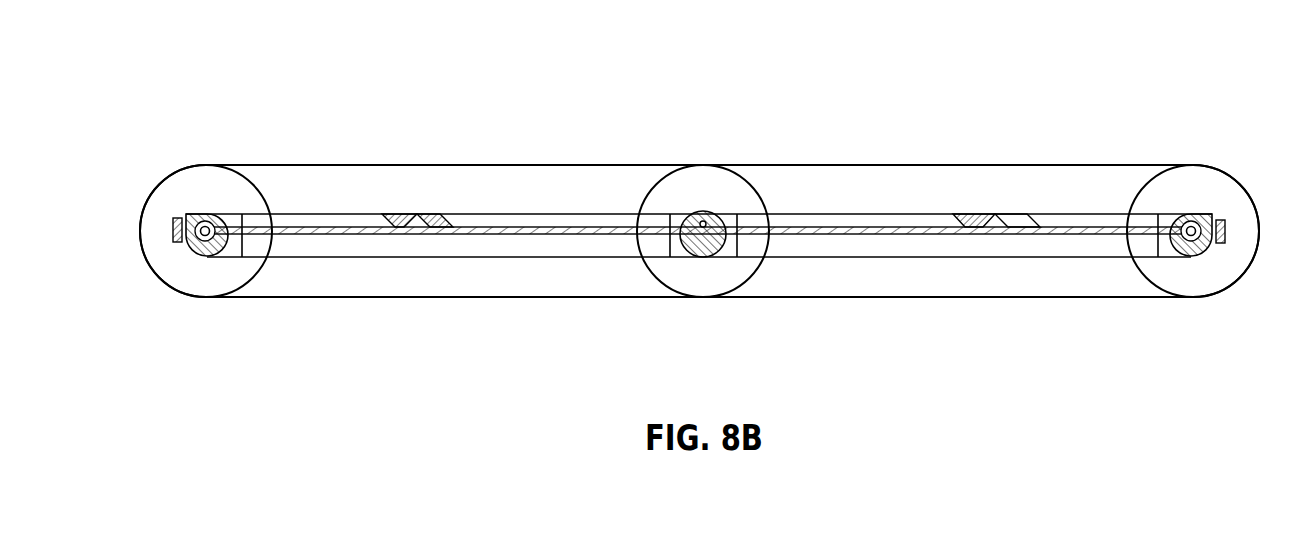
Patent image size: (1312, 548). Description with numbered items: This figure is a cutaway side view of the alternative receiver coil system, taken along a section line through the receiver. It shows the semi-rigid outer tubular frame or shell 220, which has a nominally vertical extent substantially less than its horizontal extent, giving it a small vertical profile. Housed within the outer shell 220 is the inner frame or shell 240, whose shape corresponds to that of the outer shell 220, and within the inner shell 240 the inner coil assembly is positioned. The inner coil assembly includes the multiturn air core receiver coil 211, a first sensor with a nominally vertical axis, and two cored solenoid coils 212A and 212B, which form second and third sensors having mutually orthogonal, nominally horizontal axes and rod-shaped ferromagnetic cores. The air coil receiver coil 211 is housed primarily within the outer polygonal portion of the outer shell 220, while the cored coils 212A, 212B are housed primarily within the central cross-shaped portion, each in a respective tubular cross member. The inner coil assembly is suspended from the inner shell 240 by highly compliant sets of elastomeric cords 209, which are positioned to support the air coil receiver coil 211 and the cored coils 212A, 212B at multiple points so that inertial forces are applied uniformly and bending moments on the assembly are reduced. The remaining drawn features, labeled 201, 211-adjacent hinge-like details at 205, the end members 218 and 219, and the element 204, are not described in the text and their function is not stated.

The first hinge 201 is at (204, 214).
The multiturn air core receiver coil 211 is at (213, 214).
The first end stop 218 is at (177, 218).
The second end stop 219 is at (1226, 232).
The elastomeric cords 209 is at (408, 214).
The solenoid coil 212A is at (484, 214).
The solenoid coil 212B is at (705, 221).
The second hinge 205 is at (722, 213).
The outer tubular frame or shell 220 is at (828, 165).
The second connector 204 is at (920, 214).
The inner frame or shell 240 is at (210, 258).